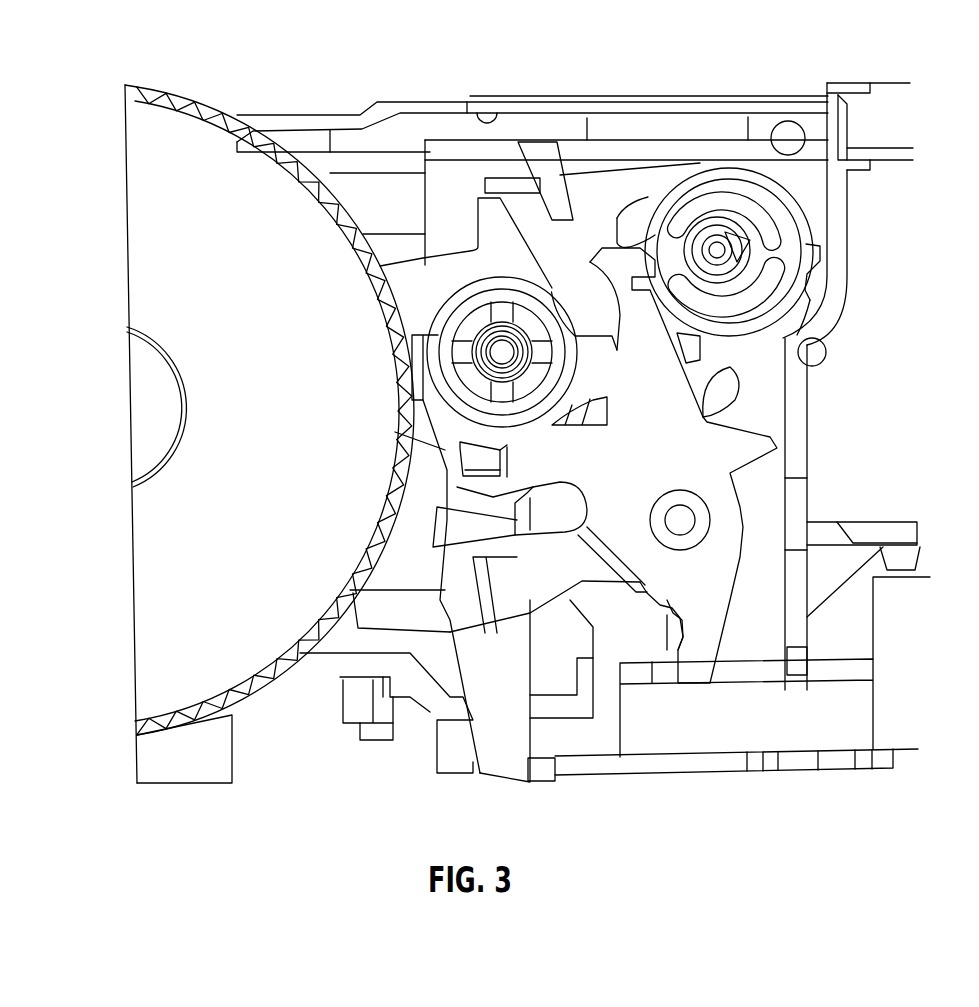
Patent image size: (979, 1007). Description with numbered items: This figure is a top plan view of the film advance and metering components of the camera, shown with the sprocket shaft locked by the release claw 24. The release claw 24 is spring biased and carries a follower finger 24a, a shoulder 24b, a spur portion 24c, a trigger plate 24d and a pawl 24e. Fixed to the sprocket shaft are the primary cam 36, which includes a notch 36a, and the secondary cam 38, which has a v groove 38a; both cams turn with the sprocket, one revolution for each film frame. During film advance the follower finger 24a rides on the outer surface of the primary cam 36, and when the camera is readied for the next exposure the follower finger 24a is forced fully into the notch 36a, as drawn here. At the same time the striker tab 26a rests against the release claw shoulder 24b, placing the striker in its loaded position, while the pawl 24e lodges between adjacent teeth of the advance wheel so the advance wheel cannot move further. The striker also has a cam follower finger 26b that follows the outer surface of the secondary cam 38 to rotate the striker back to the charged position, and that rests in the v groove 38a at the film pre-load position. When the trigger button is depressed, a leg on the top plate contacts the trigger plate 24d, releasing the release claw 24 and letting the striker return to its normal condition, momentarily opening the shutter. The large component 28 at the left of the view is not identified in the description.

The release claw 24 is at (710, 613).
The follower finger 24a is at (613, 243).
The shoulder 24b is at (582, 507).
The spur portion 24c is at (488, 453).
The trigger plate 24d is at (690, 667).
The pawl 24e is at (350, 623).
The tab 26a is at (525, 540).
The cam follower finger 26b is at (693, 352).
The drum 28 is at (165, 252).
The primary cam 36 is at (797, 251).
The notch 36a is at (620, 216).
The secondary cam 38 is at (808, 337).
The v groove 38a is at (820, 274).